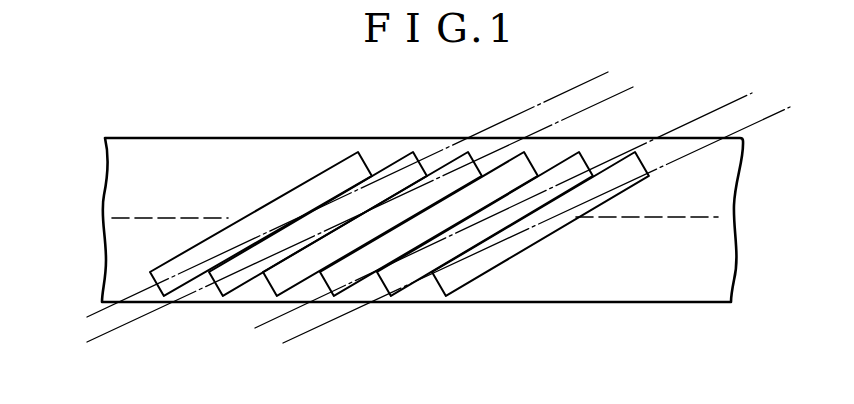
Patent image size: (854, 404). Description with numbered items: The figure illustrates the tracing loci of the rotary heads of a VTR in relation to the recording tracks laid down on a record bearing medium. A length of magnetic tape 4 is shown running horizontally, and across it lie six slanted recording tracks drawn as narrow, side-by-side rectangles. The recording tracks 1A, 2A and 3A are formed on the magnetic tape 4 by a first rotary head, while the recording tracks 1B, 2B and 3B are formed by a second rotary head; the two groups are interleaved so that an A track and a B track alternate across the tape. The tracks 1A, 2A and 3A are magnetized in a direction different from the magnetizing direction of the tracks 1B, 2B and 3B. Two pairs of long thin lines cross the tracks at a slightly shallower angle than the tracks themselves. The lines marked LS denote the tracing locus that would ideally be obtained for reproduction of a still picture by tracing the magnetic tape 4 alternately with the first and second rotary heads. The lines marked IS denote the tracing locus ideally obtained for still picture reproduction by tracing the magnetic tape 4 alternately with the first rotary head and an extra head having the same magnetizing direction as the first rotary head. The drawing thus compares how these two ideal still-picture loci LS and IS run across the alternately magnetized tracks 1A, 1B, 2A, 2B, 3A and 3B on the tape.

The magnetic tape 4 is at (173, 146).
The recording track 1A is at (628, 155).
The recording track 1B is at (588, 154).
The recording track 2A is at (521, 153).
The recording track 2B is at (460, 156).
The recording track 3A is at (409, 153).
The recording track 3B is at (356, 152).
The tracing locus IS is at (582, 92).
The tracing locus LS is at (730, 115).